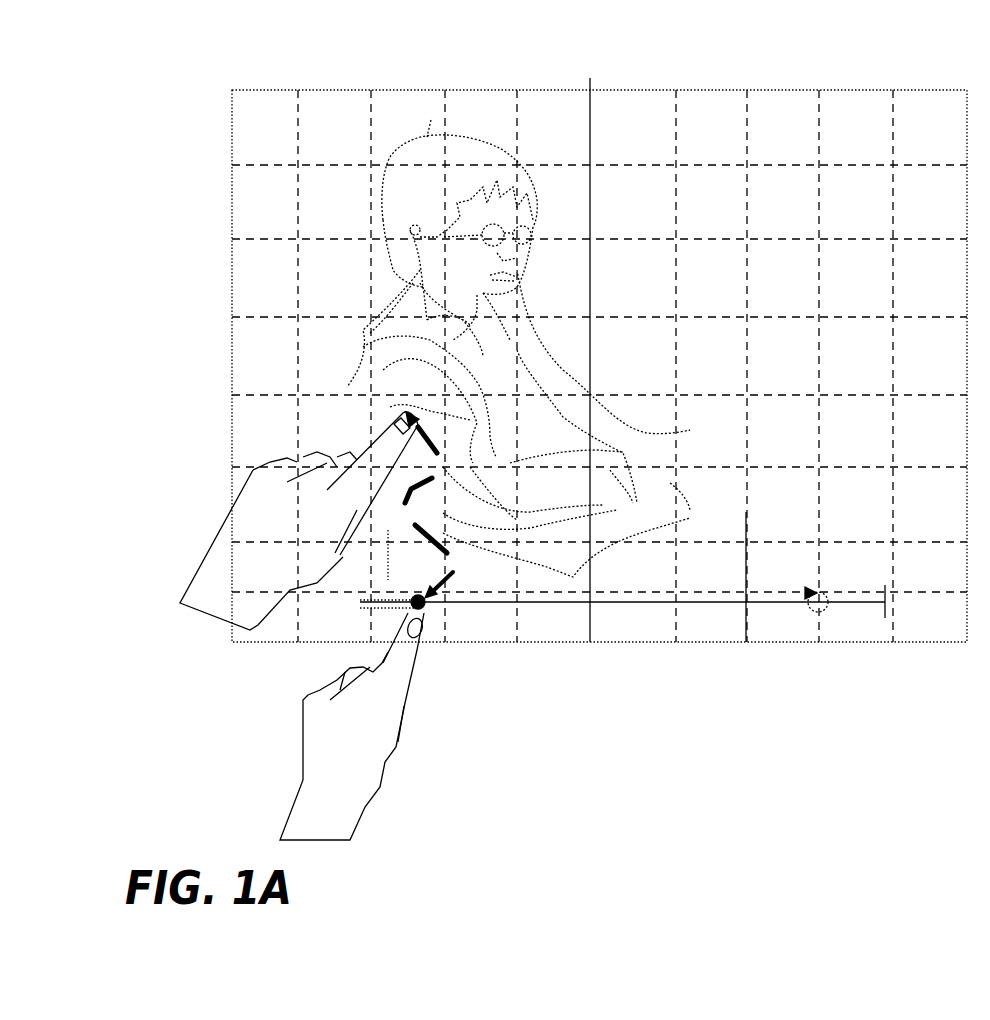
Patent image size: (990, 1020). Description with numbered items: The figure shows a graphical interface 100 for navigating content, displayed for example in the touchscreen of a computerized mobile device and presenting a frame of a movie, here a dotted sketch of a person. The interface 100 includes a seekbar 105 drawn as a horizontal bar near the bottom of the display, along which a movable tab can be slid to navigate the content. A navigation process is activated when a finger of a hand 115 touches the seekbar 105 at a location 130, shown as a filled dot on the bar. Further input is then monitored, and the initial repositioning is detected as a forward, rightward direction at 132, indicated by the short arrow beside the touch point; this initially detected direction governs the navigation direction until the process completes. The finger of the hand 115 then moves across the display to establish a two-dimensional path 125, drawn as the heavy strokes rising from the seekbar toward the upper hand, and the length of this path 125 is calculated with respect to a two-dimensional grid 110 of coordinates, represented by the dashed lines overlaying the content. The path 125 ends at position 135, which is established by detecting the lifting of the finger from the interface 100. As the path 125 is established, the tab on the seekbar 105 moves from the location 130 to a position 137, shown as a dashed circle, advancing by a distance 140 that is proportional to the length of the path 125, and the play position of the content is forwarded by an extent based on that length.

The graphical interface 100 is at (244, 68).
The seekbar 105 is at (708, 598).
The 2D grid 110 is at (300, 210).
The hand 115 is at (243, 517).
The 2D path 125 is at (417, 525).
The tab location 130 is at (433, 610).
The forward repositioning direction 132 is at (452, 565).
The end position of path 135 is at (370, 360).
The advanced tab position 137 is at (822, 610).
The tab advance distance 140 is at (770, 593).